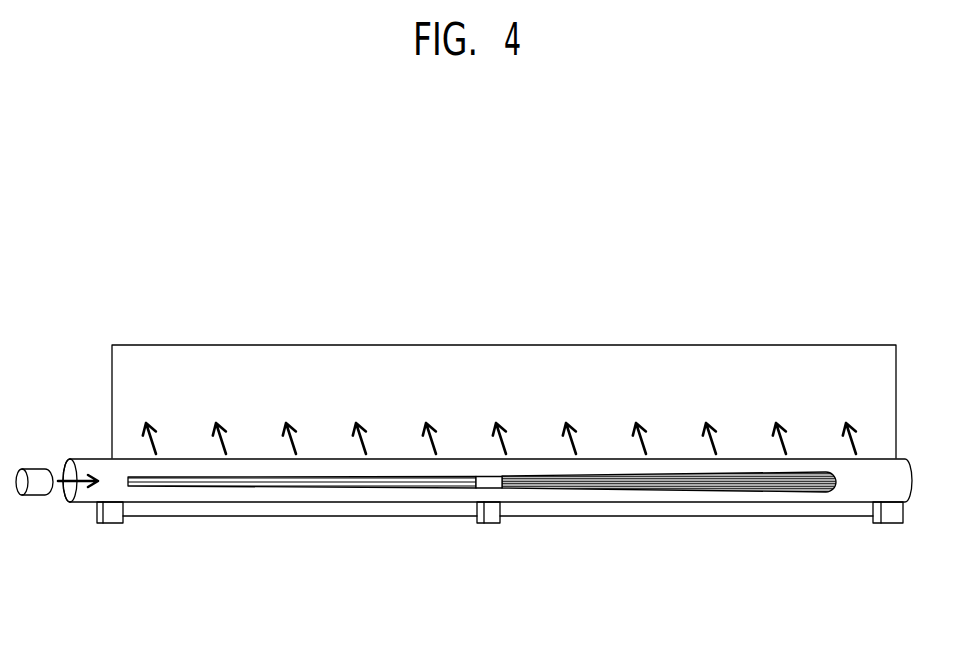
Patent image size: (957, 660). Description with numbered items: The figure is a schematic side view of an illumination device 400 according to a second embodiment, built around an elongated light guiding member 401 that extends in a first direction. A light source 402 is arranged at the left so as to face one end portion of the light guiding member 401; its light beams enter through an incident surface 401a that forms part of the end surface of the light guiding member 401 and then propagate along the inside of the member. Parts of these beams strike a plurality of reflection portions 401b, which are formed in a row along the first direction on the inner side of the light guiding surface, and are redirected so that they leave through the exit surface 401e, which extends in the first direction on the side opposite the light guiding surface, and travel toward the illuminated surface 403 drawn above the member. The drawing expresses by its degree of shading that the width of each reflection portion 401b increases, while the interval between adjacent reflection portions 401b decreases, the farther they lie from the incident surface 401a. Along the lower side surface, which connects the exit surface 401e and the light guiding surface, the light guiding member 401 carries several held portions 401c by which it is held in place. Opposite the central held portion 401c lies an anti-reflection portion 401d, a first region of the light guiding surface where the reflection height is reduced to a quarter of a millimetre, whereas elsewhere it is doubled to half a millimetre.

The illumination device 400 is at (477, 425).
The light guiding member 401 is at (96, 468).
The incident surface 401a is at (67, 504).
The reflection portions 401b is at (313, 481).
The held portions 401c is at (115, 516).
The anti-reflection portion 401d is at (490, 482).
The exit surface 401e is at (602, 466).
The light source 402 is at (37, 490).
The illuminated surface 403 is at (118, 393).